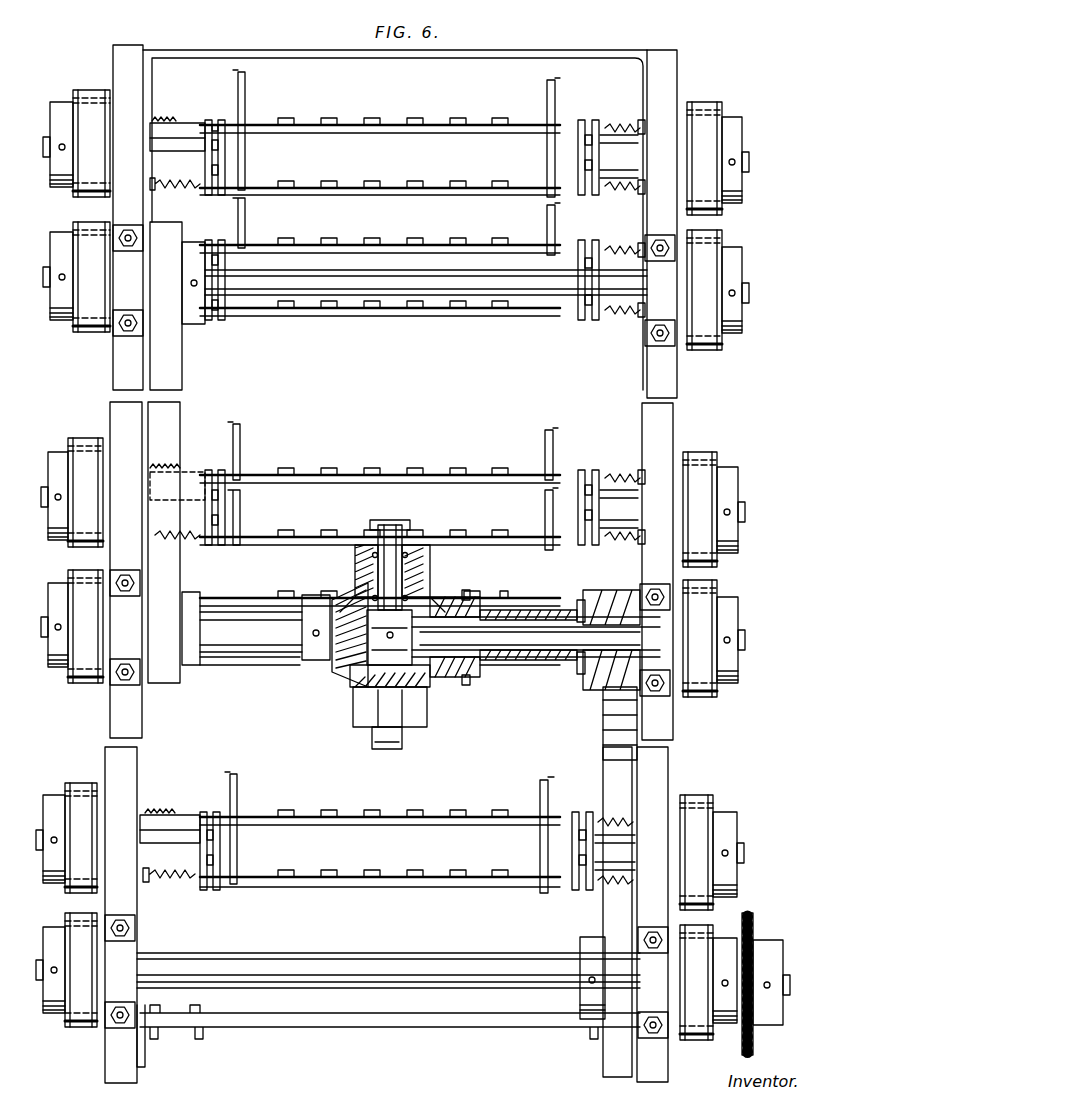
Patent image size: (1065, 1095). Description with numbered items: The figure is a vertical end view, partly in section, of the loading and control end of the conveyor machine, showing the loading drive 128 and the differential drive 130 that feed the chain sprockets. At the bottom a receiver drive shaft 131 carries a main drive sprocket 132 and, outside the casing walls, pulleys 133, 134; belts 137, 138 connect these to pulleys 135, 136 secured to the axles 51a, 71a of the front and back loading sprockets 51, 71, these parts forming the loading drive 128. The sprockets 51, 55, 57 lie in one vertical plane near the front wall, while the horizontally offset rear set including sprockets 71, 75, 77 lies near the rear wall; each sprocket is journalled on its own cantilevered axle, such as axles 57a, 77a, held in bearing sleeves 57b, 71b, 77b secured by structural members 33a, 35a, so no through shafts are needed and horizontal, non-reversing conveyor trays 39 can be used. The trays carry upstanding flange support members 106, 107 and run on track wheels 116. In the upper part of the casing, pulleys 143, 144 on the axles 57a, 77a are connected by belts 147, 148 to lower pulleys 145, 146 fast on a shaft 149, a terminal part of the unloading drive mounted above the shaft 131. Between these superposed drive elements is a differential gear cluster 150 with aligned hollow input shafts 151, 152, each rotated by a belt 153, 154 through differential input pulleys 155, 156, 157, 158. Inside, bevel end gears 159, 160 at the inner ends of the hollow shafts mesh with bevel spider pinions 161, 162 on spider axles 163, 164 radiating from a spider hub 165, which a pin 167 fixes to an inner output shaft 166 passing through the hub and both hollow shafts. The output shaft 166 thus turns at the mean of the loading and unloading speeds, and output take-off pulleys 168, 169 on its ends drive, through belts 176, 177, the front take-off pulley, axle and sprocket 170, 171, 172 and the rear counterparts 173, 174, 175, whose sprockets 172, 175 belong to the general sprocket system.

The structural member 33a is at (680, 385).
The structural member 35a is at (150, 720).
The conveyor tray 39 is at (425, 870).
The front loading sprocket 51 is at (575, 870).
The axle 51a is at (744, 850).
The sprocket 55 is at (583, 322).
The sprocket 57 is at (610, 155).
The sprocket axle 57a is at (750, 160).
The bearing sleeve 57b is at (600, 195).
The back loading sprocket 71 is at (190, 841).
The axle 71a is at (40, 832).
The bearing sleeve 71b is at (172, 815).
The sprocket 75 is at (232, 240).
The sprocket 77 is at (192, 196).
The sprocket axle 77a is at (52, 147).
The bearing sleeve 77b is at (175, 120).
The flange support member 106 is at (262, 782).
The flange support member 107 is at (525, 855).
The track wheel 116 is at (160, 905).
The loading drive 128 is at (702, 1060).
The differential drive 130 is at (545, 401).
The receiver drive shaft 131 is at (425, 995).
The main drive sprocket 132 is at (755, 1048).
The pulley 133 is at (722, 1025).
The pulley 134 is at (55, 1015).
The pulley 135 is at (737, 843).
The pulley 136 is at (62, 820).
The belt 137 is at (712, 915).
The belt 138 is at (68, 906).
The pulley 143 is at (743, 150).
The pulley 144 is at (76, 126).
The lower pulley 145 is at (742, 258).
The lower pulley 146 is at (62, 322).
The belt 147 is at (715, 228).
The belt 148 is at (75, 207).
The shaft 149 is at (430, 318).
The differential gear cluster 150 is at (421, 640).
The hollow input shaft 151 is at (525, 670).
The hollow input shaft 152 is at (270, 655).
The belt 153 is at (603, 730).
The belt 154 is at (170, 372).
The differential input pulley 155 is at (590, 937).
The differential input pulley 156 is at (600, 690).
The differential input pulley 157 is at (198, 325).
The differential input pulley 158 is at (192, 668).
The bevel end gear 159 is at (445, 680).
The bevel end gear 160 is at (340, 685).
The bevel spider pinion 161 is at (352, 710).
The bevel spider pinion 162 is at (362, 555).
The spider axle 163 is at (402, 742).
The spider axle 164 is at (420, 560).
The spider hub 165 is at (420, 590).
The inner output shaft 166 is at (520, 625).
The pin 167 is at (388, 635).
The output take-off pulley means 168 is at (730, 685).
The output take-off pulley means 169 is at (60, 670).
The differential take-off pulley 170 is at (741, 499).
The differential take-off axle 171 is at (745, 510).
The differential take-off sprocket 172 is at (585, 468).
The differential take-off pulley 173 is at (66, 489).
The differential take-off axle 174 is at (42, 505).
The differential take-off sprocket 175 is at (232, 470).
The belt means 176 is at (715, 575).
The belt means 177 is at (82, 688).